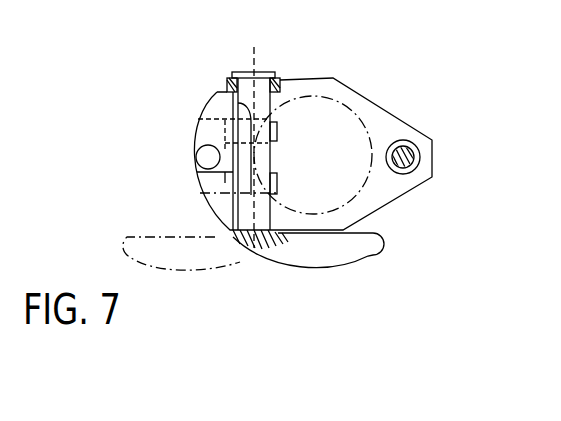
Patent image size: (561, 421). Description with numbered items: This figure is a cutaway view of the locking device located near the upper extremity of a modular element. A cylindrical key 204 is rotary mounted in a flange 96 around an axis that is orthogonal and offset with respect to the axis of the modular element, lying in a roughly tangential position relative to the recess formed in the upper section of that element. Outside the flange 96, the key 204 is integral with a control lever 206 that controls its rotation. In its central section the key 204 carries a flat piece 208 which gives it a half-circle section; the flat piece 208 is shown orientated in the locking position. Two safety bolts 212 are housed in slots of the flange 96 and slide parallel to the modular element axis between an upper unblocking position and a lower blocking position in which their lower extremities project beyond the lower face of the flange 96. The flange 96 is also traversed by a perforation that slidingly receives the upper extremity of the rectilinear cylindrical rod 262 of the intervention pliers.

The flange 96 is at (397, 115).
The cylindrical key 204 is at (262, 72).
The control lever 206 is at (366, 248).
The flat piece 208 is at (250, 165).
The safety bolts 212 is at (278, 184).
The rectilinear cylindrical rod 262 is at (413, 160).